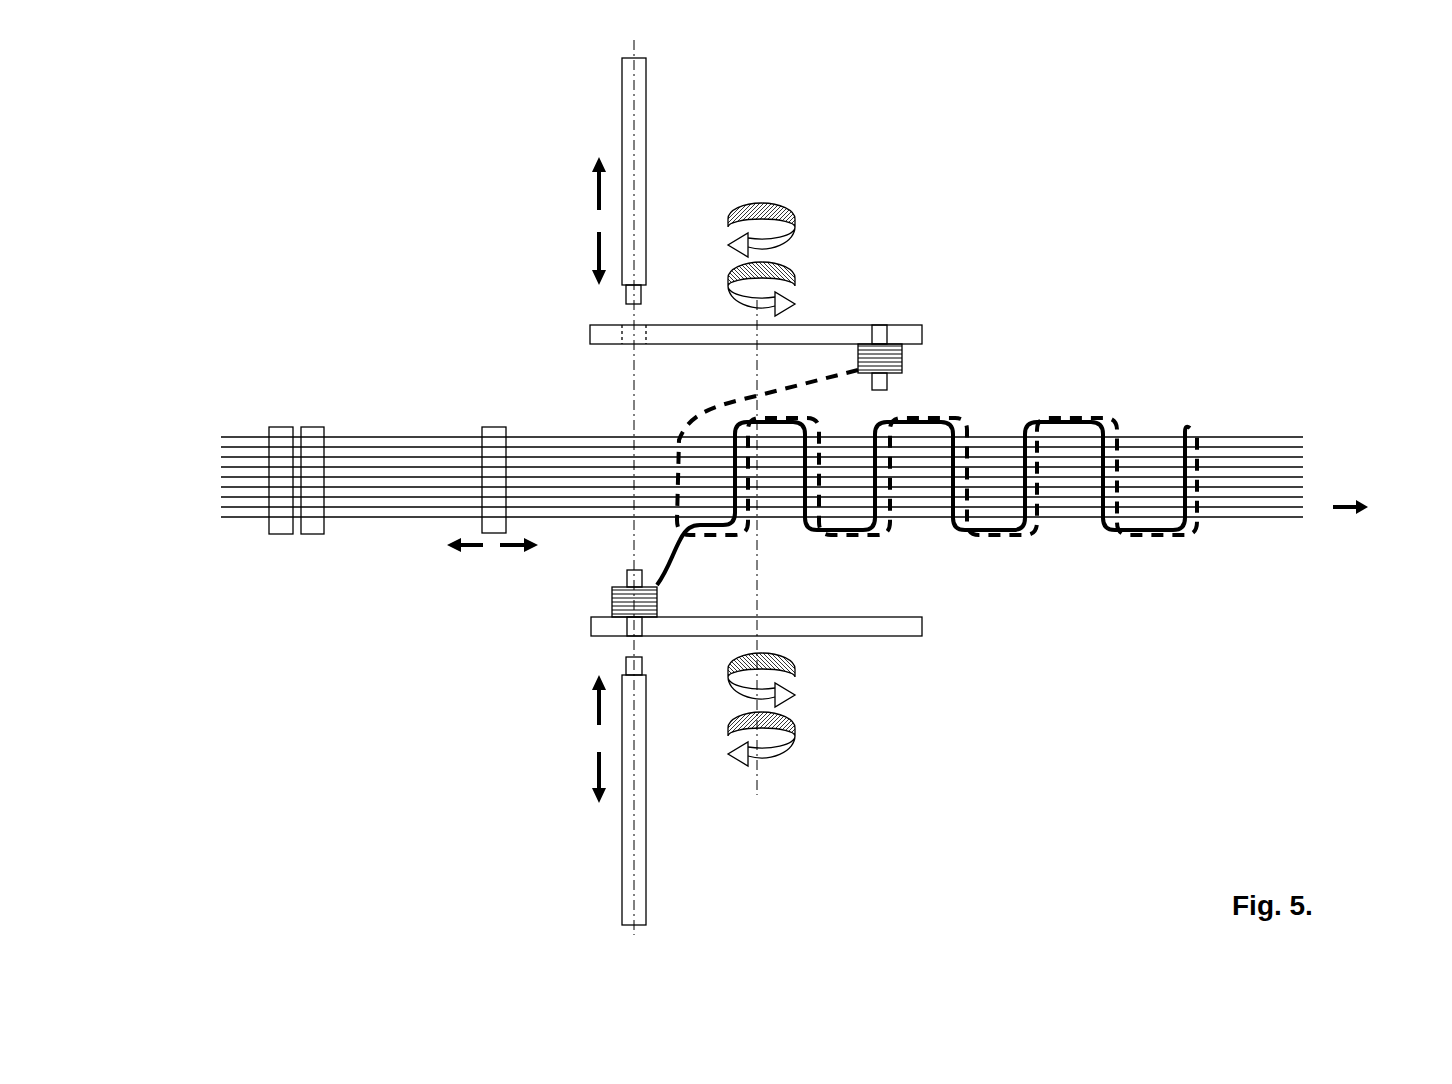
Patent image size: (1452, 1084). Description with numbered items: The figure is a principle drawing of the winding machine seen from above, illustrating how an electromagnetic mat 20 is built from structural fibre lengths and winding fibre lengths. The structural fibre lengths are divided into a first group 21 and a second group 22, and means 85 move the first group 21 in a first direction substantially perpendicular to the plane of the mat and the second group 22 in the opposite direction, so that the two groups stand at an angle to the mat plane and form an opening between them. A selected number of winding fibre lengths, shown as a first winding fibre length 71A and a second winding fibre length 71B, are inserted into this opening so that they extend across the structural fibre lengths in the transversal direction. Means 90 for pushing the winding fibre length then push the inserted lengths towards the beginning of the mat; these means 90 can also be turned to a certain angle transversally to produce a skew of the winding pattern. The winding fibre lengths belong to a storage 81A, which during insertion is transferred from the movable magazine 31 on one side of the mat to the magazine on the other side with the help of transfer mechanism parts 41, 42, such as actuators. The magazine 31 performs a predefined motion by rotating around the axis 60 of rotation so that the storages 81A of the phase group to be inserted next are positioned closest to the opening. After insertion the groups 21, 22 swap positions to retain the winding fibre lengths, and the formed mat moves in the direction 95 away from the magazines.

The wire bundle 20 is at (1322, 465).
The first group of structural fibre lengths 21 is at (220, 458).
The second group of structural fibre lengths 22 is at (220, 448).
The movable magazine 31 is at (853, 325).
The transfer mechanism part 41 is at (647, 188).
The transfer mechanism part 42 is at (651, 833).
The axis of rotation 60 is at (758, 782).
The first binding wire 71A is at (1198, 525).
The second binding wire 71B is at (1102, 530).
The storage 81A is at (902, 362).
The means for moving the structural fibre lengths 85 is at (315, 535).
The means for pushing the winding fibre length 90 is at (492, 427).
The direction 95 is at (1343, 513).